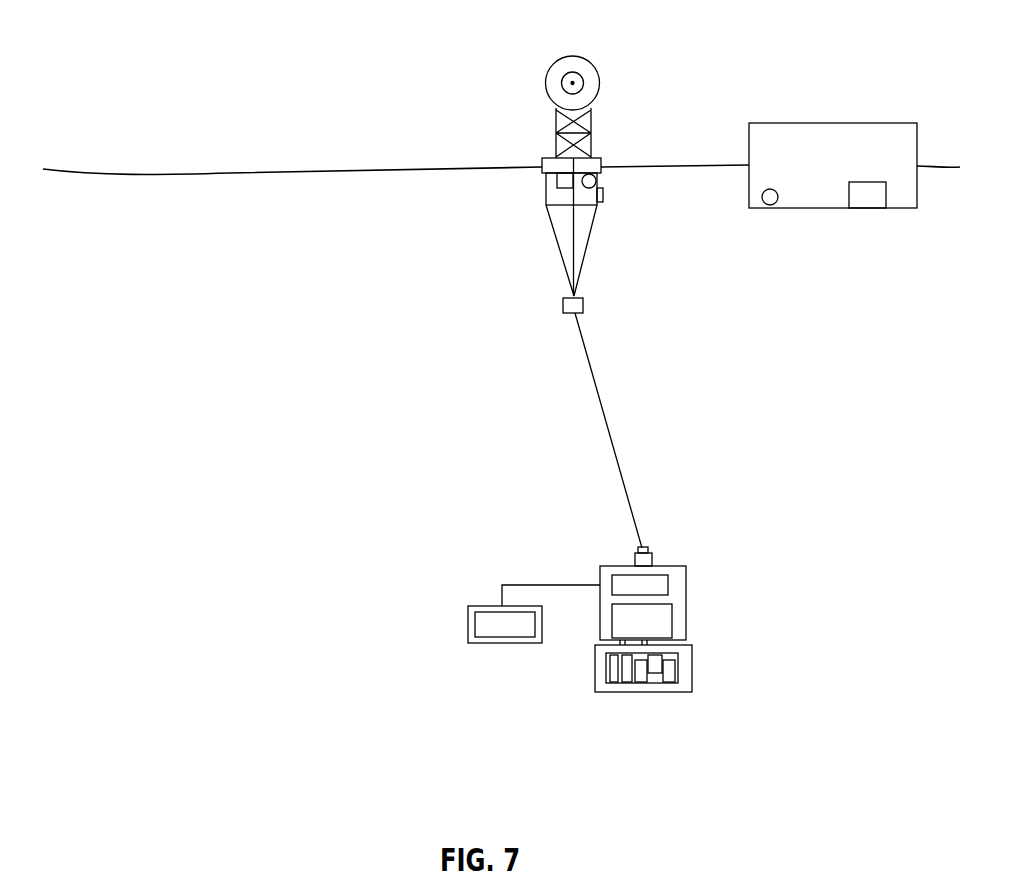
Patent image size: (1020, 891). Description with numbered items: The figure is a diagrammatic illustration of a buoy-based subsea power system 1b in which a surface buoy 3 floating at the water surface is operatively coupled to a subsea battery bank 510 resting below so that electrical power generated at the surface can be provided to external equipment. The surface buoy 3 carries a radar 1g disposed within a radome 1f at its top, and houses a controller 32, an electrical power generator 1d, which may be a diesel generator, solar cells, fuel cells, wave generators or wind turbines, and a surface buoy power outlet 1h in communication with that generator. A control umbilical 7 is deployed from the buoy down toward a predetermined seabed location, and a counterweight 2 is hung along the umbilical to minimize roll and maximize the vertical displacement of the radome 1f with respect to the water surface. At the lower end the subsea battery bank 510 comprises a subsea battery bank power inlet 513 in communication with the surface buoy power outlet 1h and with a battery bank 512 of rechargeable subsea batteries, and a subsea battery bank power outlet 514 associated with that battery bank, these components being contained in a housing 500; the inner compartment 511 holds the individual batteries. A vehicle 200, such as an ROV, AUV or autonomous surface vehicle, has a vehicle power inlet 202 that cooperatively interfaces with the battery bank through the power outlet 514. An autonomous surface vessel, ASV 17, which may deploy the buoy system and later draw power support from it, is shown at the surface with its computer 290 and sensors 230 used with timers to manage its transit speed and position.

The surface buoy 3 is at (288, 115).
The subsea power system 1b is at (305, 365).
The radome 1f is at (549, 72).
The radar 1g is at (570, 166).
The electrical power generator 1d is at (560, 177).
The surface buoy power outlet 1h is at (572, 190).
The controller 32 is at (590, 188).
The counterweight 2 is at (563, 305).
The control umbilical 7 is at (596, 388).
The ASV 17 is at (789, 123).
The sensors 230 is at (767, 206).
The computer 290 is at (866, 210).
The vehicle 200 is at (483, 606).
The vehicle power inlet 202 is at (556, 585).
The housing 500 is at (653, 592).
The subsea battery bank power inlet 513 is at (642, 640).
The subsea battery bank power outlet 514 is at (609, 640).
The subsea battery bank 510 is at (641, 700).
The storage housing 511 is at (594, 680).
The battery bank 512 is at (637, 684).